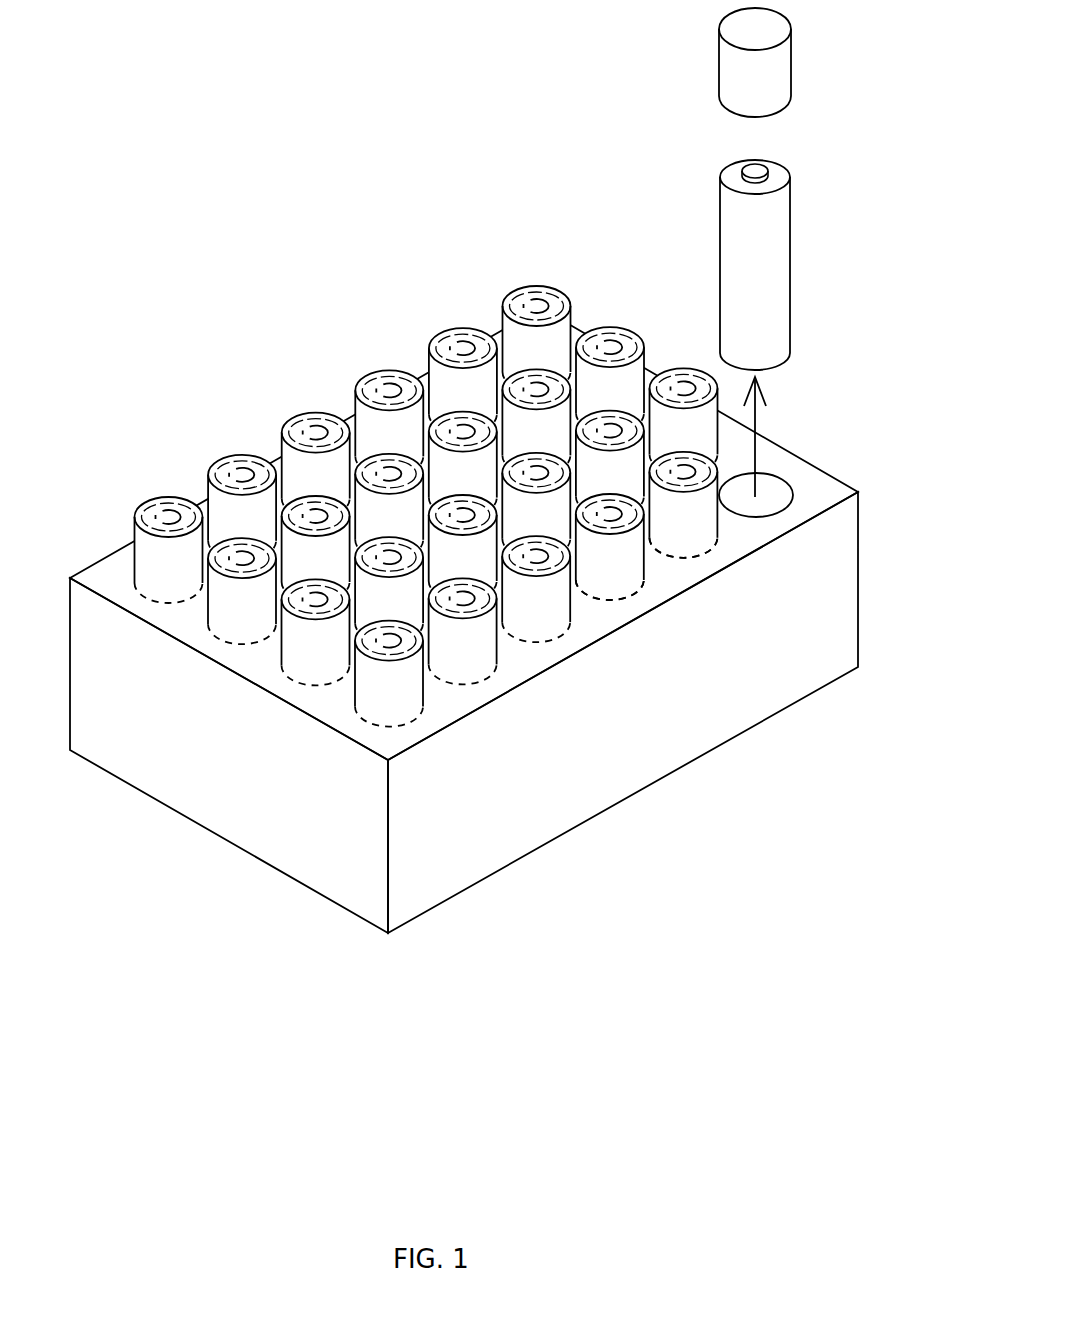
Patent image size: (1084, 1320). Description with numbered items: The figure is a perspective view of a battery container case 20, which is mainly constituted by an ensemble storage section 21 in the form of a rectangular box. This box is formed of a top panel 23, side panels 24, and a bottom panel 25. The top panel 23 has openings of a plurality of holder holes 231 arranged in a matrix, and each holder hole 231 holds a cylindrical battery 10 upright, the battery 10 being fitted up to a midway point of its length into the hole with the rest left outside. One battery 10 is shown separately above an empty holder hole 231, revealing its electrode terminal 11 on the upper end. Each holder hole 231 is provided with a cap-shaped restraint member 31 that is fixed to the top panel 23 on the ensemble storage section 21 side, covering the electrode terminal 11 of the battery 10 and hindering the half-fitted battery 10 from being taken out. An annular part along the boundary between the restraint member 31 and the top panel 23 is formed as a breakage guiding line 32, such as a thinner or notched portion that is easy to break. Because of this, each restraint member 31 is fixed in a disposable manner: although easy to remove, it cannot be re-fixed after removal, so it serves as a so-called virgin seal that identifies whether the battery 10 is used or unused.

The cylindrical battery 10 is at (514, 443).
The electrode terminal 11 is at (763, 165).
The battery container case 20 is at (504, 627).
The ensemble storage section 21 is at (637, 725).
The top panel 23 is at (504, 534).
The holder hole 231 is at (816, 447).
The side panel 24 is at (229, 755).
The bottom panel 25 is at (502, 840).
The restraint member 31 is at (467, 332).
The breakage guiding line 32 is at (602, 592).